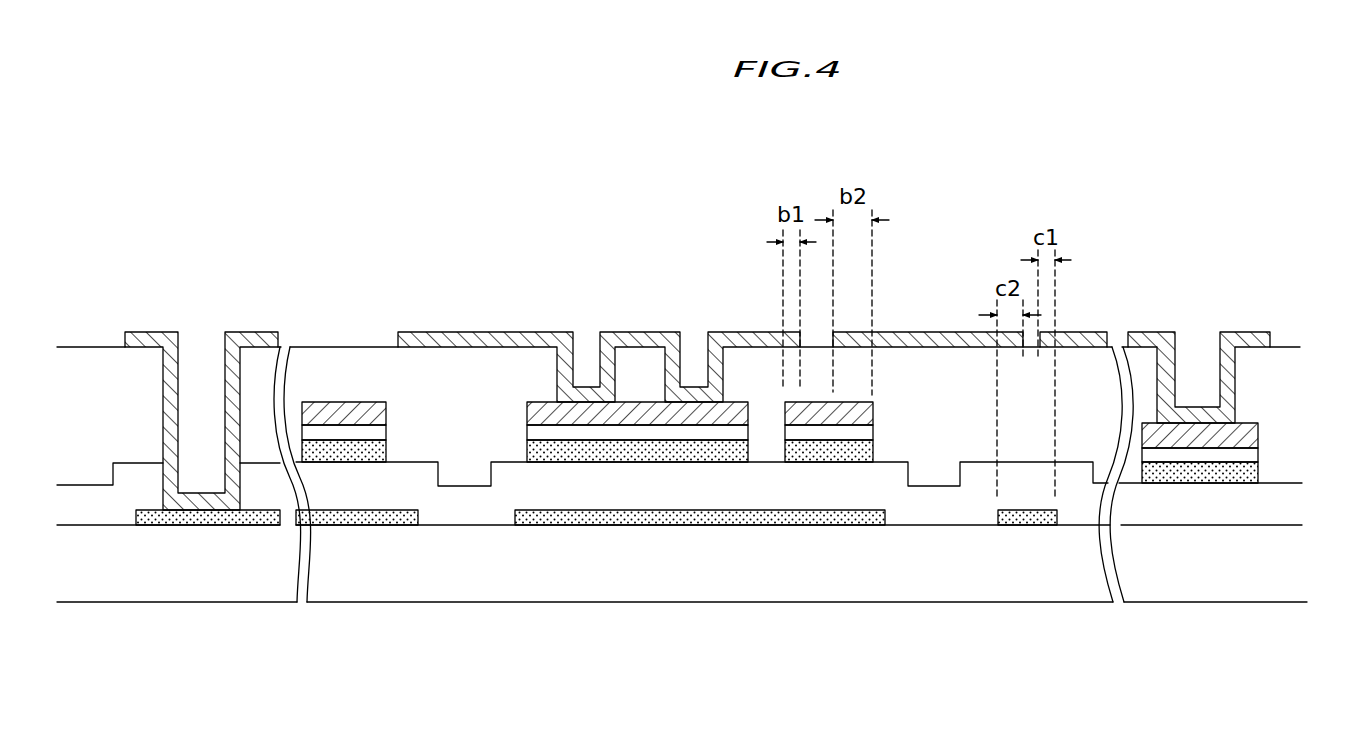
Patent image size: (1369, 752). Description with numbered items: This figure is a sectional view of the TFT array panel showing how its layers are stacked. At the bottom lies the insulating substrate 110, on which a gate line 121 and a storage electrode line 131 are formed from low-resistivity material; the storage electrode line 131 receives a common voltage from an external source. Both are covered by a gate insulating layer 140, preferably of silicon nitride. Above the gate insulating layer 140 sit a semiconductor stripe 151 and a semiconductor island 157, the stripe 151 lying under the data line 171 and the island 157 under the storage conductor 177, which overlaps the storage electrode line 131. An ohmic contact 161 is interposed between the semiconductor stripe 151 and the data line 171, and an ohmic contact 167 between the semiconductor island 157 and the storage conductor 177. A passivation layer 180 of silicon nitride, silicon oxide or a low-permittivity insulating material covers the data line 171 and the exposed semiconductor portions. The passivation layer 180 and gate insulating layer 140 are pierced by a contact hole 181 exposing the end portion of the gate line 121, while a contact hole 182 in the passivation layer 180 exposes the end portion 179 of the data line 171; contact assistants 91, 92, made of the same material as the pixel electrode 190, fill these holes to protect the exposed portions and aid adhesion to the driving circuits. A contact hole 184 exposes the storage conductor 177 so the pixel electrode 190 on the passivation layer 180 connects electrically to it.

The contact assistant 91 is at (152, 332).
The contact assistant 92 is at (1255, 338).
The insulating substrate 110 is at (140, 590).
The gate line 121 is at (228, 515).
The storage electrode line 131 is at (657, 518).
The gate insulating layer 140 is at (97, 515).
The semiconductor stripe 151 is at (338, 461).
The semiconductor island 157 is at (573, 458).
The ohmic contact 161 is at (313, 435).
The ohmic contact 167 is at (626, 437).
The data line 171 is at (360, 412).
The storage conductor 177 is at (660, 415).
The end portion of the data line 179 is at (1222, 432).
The passivation layer 180 is at (83, 352).
The contact hole 181 is at (205, 328).
The contact hole 182 is at (1197, 338).
The contact hole 184 is at (584, 335).
The pixel electrode 190 is at (441, 332).